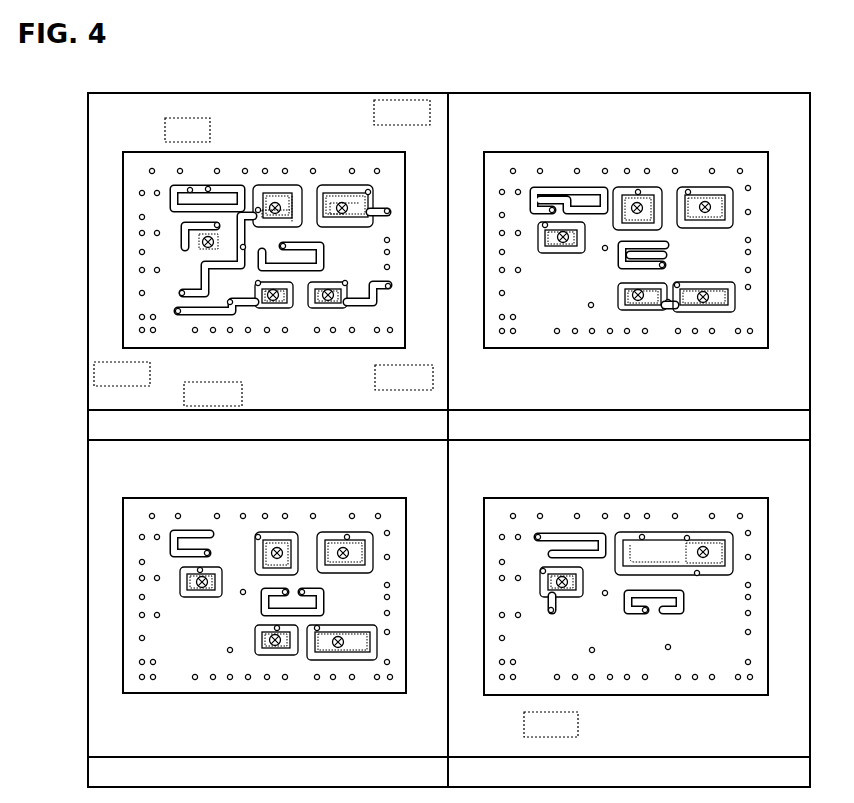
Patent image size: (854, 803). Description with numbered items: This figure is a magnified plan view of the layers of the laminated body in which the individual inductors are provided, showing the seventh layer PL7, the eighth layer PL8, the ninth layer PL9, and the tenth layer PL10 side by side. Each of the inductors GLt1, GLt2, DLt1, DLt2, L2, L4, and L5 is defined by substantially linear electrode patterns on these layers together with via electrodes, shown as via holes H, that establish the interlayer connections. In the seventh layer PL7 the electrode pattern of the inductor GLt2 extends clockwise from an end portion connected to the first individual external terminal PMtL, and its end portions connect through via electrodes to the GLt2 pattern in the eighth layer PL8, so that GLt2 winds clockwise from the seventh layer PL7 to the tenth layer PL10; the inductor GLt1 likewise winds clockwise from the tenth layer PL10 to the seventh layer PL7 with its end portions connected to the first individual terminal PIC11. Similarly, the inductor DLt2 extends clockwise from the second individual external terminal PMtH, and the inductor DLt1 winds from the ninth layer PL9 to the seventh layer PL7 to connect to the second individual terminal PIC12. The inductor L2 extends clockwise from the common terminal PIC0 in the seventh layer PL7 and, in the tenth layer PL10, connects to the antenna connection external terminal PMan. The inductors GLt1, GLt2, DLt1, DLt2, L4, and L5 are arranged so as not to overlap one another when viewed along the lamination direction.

The inductor L5 is at (162, 196).
The inductor L2 is at (178, 239).
The inductor L4 is at (331, 255).
The inductor GLt1 is at (281, 184).
The inductor GLt2 is at (333, 184).
The inductor DLt1 is at (275, 308).
The inductor DLt2 is at (335, 308).
The via hole H is at (292, 212).
The common terminal PIC0 is at (190, 243).
The first individual terminal PIC11 is at (188, 297).
The second individual terminal PIC12 is at (186, 313).
The first individual external terminal PMtL is at (394, 210).
The second individual external terminal PMtH is at (393, 292).
The antenna connection external terminal PMan is at (552, 612).
The seventh layer PL7 is at (264, 293).
The eighth layer PL8 is at (264, 640).
The ninth layer PL9 is at (626, 293).
The tenth layer PL10 is at (626, 640).